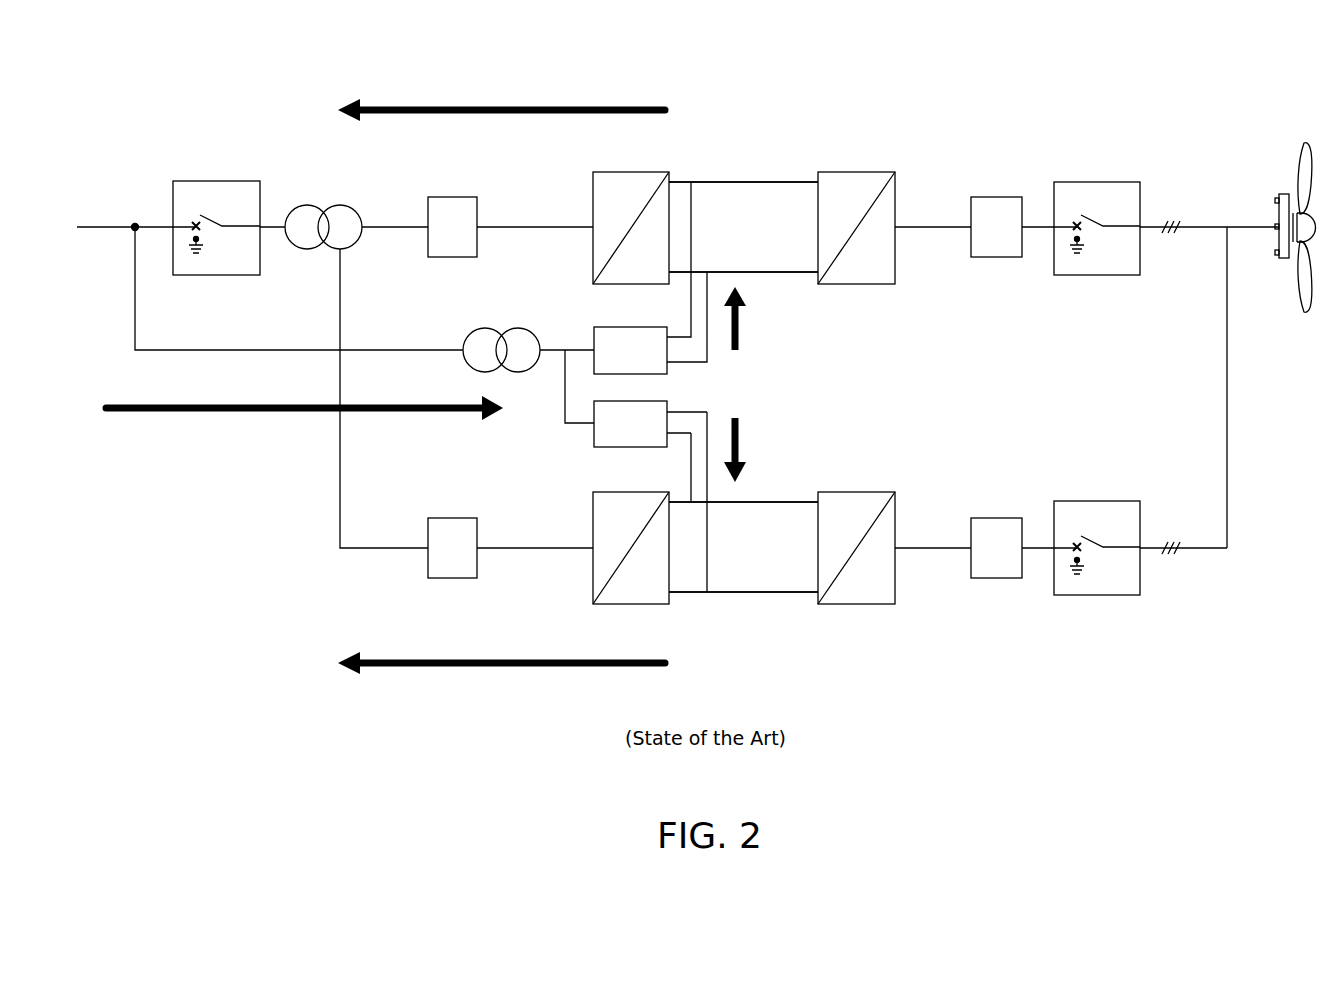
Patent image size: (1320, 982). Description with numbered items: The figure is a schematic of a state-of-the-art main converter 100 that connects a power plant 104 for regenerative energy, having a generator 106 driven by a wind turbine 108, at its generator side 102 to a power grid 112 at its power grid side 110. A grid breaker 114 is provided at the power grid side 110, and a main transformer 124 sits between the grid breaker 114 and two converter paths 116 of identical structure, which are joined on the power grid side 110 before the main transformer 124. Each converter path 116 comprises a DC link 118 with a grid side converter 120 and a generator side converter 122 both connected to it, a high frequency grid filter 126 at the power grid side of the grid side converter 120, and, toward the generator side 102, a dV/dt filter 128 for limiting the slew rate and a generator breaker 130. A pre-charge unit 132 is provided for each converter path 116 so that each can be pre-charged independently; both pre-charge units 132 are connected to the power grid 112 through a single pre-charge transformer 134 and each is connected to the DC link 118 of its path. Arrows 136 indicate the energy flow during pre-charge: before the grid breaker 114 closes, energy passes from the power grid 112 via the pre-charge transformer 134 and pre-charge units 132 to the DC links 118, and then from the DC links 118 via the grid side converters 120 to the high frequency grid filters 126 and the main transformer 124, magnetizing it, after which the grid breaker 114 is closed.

The main converter 100 is at (700, 122).
The generator side 102 is at (1226, 214).
The power plant 104 is at (1276, 153).
The generator 106 is at (1283, 262).
The wind turbine 108 is at (1304, 316).
The power grid side 110 is at (152, 183).
The power grid 112 is at (133, 207).
The grid breaker 114 is at (245, 181).
The converter path 116 is at (763, 150).
The DC link 118 is at (737, 182).
The grid side converter 120 is at (632, 172).
The generator side converter 122 is at (855, 172).
The main transformer 124 is at (305, 205).
The high frequency grid filter 126 is at (447, 197).
The dV/dt filter 128 is at (1000, 197).
The generator breaker 130 is at (1097, 182).
The pre-charge unit 132 is at (594, 442).
The pre-charge transformer 134 is at (478, 328).
The arrows 136 is at (502, 104).